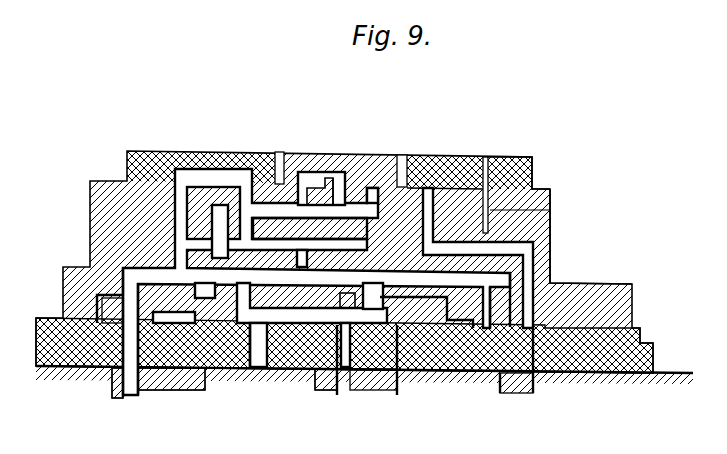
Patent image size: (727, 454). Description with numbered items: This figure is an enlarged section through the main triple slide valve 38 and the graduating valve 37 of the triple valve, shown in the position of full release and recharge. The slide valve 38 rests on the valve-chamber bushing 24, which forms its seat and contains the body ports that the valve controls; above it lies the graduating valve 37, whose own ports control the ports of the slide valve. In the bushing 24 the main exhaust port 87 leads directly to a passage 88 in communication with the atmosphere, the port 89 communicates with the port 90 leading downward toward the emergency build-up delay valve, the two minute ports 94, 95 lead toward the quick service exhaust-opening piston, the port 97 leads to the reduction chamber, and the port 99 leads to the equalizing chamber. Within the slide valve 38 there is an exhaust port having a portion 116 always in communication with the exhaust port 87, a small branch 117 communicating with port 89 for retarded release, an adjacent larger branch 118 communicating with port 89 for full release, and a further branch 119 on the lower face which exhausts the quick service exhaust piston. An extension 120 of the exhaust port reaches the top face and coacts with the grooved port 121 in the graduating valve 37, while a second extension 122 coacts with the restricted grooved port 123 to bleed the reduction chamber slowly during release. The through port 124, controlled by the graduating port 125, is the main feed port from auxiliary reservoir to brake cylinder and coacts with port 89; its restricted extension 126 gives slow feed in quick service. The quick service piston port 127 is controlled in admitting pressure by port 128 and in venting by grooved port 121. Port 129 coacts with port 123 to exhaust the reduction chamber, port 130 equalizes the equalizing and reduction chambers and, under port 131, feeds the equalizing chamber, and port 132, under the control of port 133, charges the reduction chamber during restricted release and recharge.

The extension of the exhaust port 120 is at (182, 220).
The grooved port 121 is at (212, 173).
The port 128 is at (279, 153).
The second extension 122 is at (303, 190).
The restricted grooved port 123 is at (333, 173).
The through port 124 is at (372, 190).
The graduating port 125 is at (401, 160).
The port 131 is at (430, 190).
The port 133 is at (487, 158).
The graduating valve 37 is at (535, 172).
The port 132 is at (550, 204).
The main triple slide valve 38 is at (535, 228).
The port 130 is at (528, 252).
The valve-chamber bushing 24 is at (653, 348).
The larger branch of the exhaust port 118 is at (97, 293).
The small branch of the exhaust port 117 is at (130, 313).
The brake cylinder port 89 is at (102, 367).
The port 90 is at (130, 395).
The restricted extension 126 is at (170, 367).
The main exhaust port 87 is at (262, 367).
The portion of the exhaust port 116 is at (285, 317).
The passage 88 is at (300, 380).
The minute port 94 is at (338, 377).
The quick service piston port 127 is at (368, 320).
The minute port 95 is at (393, 380).
The port 129 is at (412, 273).
The branch of the exhaust port 119 is at (468, 317).
The port 97 is at (510, 373).
The port 99 is at (545, 373).